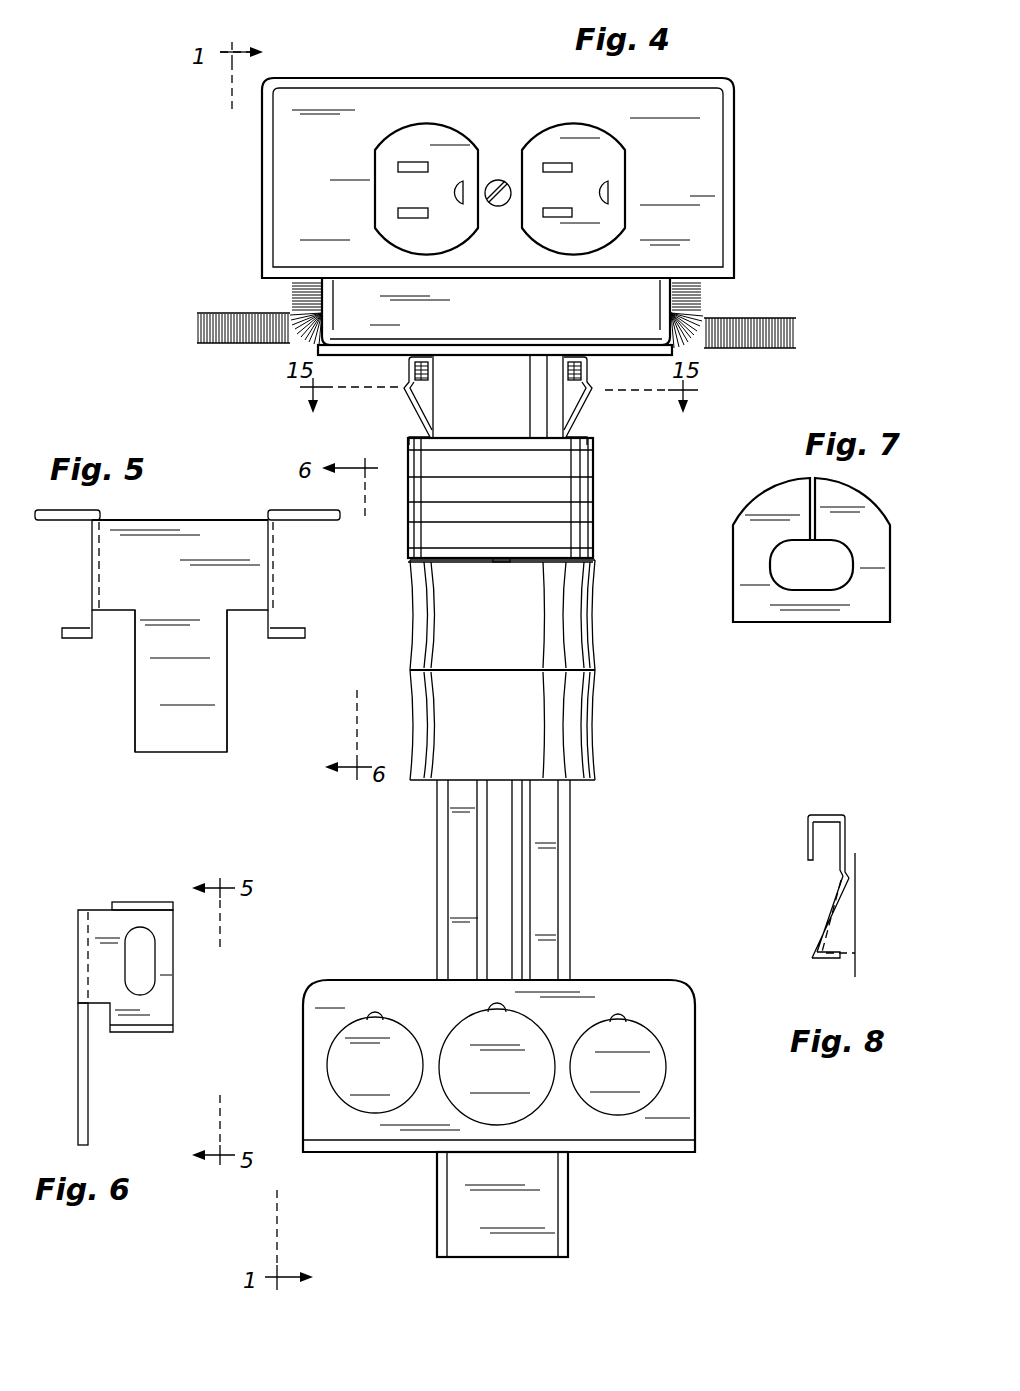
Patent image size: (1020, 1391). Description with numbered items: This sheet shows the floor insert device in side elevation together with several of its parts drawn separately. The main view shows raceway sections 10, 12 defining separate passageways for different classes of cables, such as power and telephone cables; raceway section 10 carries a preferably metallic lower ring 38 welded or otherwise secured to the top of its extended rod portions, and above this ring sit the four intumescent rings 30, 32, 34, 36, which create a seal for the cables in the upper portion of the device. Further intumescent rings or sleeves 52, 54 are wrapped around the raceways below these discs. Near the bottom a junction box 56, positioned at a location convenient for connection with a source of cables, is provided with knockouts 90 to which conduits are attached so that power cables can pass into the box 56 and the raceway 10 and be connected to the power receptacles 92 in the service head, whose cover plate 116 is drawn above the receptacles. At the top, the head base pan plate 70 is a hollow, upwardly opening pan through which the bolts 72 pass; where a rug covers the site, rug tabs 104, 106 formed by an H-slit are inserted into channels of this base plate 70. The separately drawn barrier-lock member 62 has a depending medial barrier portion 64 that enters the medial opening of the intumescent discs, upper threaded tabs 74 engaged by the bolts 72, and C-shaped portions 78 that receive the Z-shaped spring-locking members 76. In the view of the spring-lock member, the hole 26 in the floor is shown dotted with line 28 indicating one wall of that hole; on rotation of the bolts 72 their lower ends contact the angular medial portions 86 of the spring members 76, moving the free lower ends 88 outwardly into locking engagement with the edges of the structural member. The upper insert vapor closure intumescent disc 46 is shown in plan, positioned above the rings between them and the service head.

In FIG. 4, the raceway section 10 is at (517, 878).
In FIG. 4, the raceway section 12 is at (452, 880).
In FIG. 8, the hole 26 is at (846, 928).
In FIG. 8, the line 28 is at (856, 940).
In FIG. 4, the intumescent ring 30 is at (590, 467).
In FIG. 4, the intumescent ring 32 is at (585, 491).
In FIG. 4, the intumescent ring 34 is at (585, 512).
In FIG. 4, the intumescent ring 36 is at (585, 537).
In FIG. 4, the lower ring 38 is at (575, 562).
In FIG. 7, the intumescent disc 46 is at (768, 608).
In FIG. 4, the intumescent sleeve 52 is at (418, 612).
In FIG. 4, the intumescent sleeve 54 is at (578, 725).
In FIG. 4, the junction box 56 is at (648, 995).
In FIG. 5, the barrier-lock member 62 is at (186, 518).
In FIG. 6, the barrier-lock member 62 is at (96, 902).
In FIG. 5, the medial barrier portion 64 is at (198, 745).
In FIG. 6, the medial barrier portion 64 is at (83, 1093).
In FIG. 4, the head base pan plate 70 is at (517, 314).
In FIG. 4, the bolt 72 is at (428, 372).
In FIG. 5, the threaded tab 74 is at (50, 520).
In FIG. 6, the threaded tab 74 is at (163, 900).
In FIG. 4, the Z-shaped spring-locking member 76 is at (408, 412).
In FIG. 8, the Z-shaped spring-locking member 76 is at (836, 812).
In FIG. 5, the C-shaped portion 78 is at (90, 583).
In FIG. 8, the C-shaped portion 78 is at (808, 845).
In FIG. 8, the angular medial portion 86 is at (812, 935).
In FIG. 8, the free lower end 88 is at (830, 962).
In FIG. 4, the knockout 90 is at (470, 1030).
In FIG. 4, the power receptacle 92 is at (398, 148).
In FIG. 4, the rug tab 104 is at (705, 300).
In FIG. 4, the rug tab 106 is at (298, 297).
In FIG. 4, the cover plate 116 is at (520, 78).